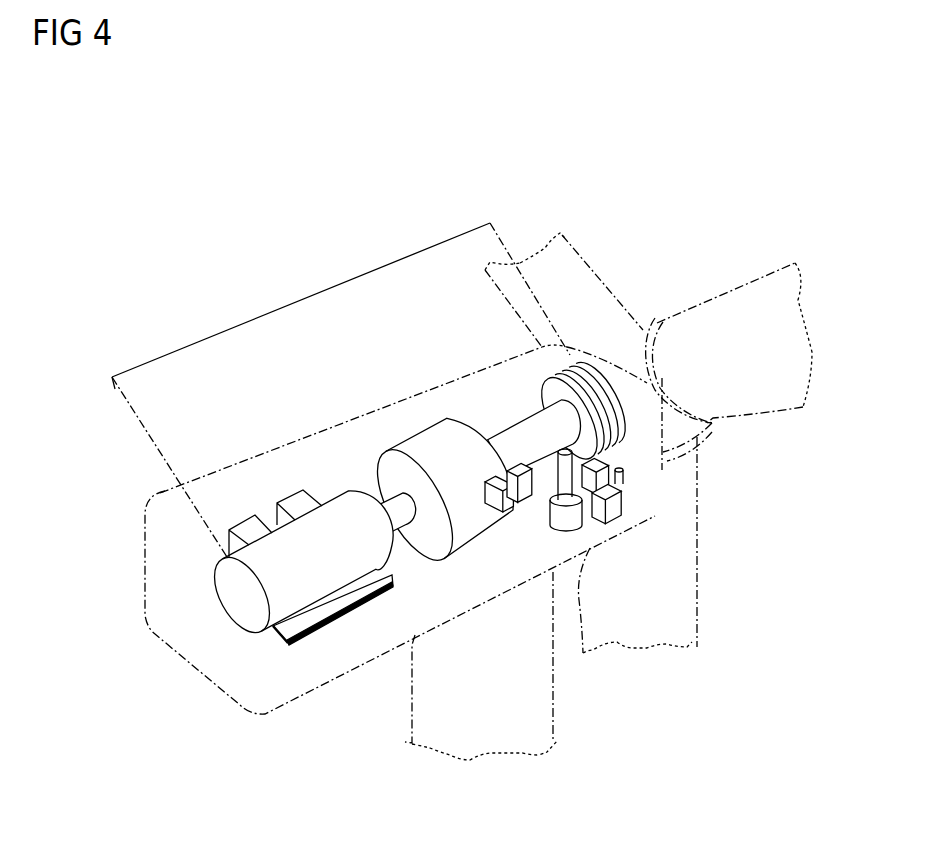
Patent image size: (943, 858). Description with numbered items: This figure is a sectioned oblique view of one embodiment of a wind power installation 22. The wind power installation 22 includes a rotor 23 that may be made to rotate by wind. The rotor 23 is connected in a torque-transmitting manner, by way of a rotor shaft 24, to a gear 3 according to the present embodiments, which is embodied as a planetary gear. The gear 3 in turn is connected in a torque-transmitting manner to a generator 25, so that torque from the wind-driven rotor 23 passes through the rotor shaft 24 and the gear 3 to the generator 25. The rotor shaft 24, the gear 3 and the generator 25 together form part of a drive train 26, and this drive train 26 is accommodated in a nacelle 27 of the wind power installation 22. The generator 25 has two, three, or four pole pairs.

The gear 3 is at (428, 433).
The wind power installation 22 is at (181, 212).
The rotor 23 is at (685, 592).
The rotor shaft 24 is at (520, 437).
The generator 25 is at (244, 601).
The drive train 26 is at (304, 297).
The nacelle 27 is at (323, 433).